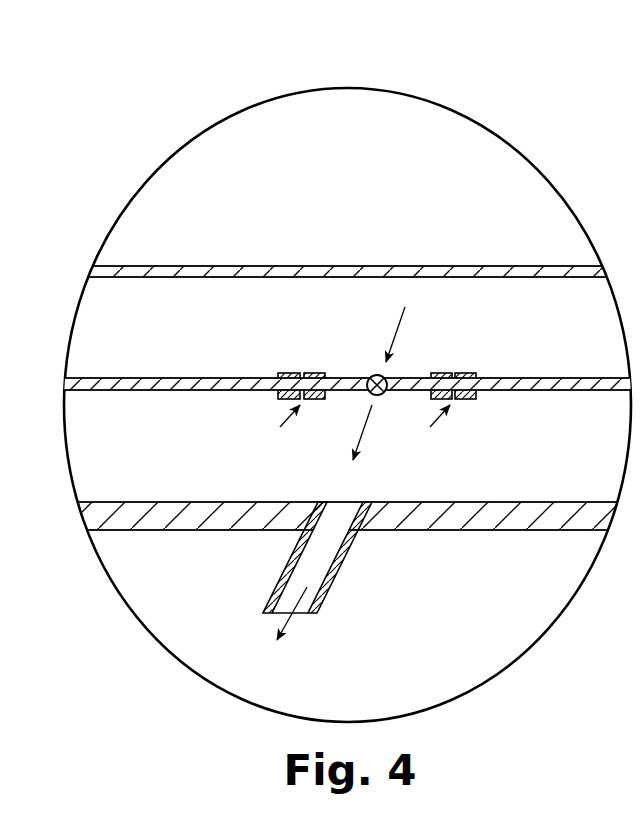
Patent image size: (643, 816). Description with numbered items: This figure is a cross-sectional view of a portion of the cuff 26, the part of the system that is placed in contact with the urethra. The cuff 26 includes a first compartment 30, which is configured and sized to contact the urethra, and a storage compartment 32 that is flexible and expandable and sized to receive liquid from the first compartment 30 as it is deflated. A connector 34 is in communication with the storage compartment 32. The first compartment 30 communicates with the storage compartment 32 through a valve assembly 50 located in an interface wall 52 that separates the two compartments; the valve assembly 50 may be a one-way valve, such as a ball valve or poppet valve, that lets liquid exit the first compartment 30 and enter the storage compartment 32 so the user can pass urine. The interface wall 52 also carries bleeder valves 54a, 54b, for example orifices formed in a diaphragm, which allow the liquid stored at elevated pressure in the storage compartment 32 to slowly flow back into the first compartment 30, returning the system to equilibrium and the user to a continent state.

The cuff 26 is at (544, 91).
The first compartment 30 is at (273, 293).
The storage compartment 32 is at (242, 485).
The connector 34 is at (332, 583).
The valve assembly 50 is at (387, 372).
The interface wall 52 is at (158, 377).
The bleeder valve 54a is at (313, 372).
The bleeder valve 54b is at (460, 374).